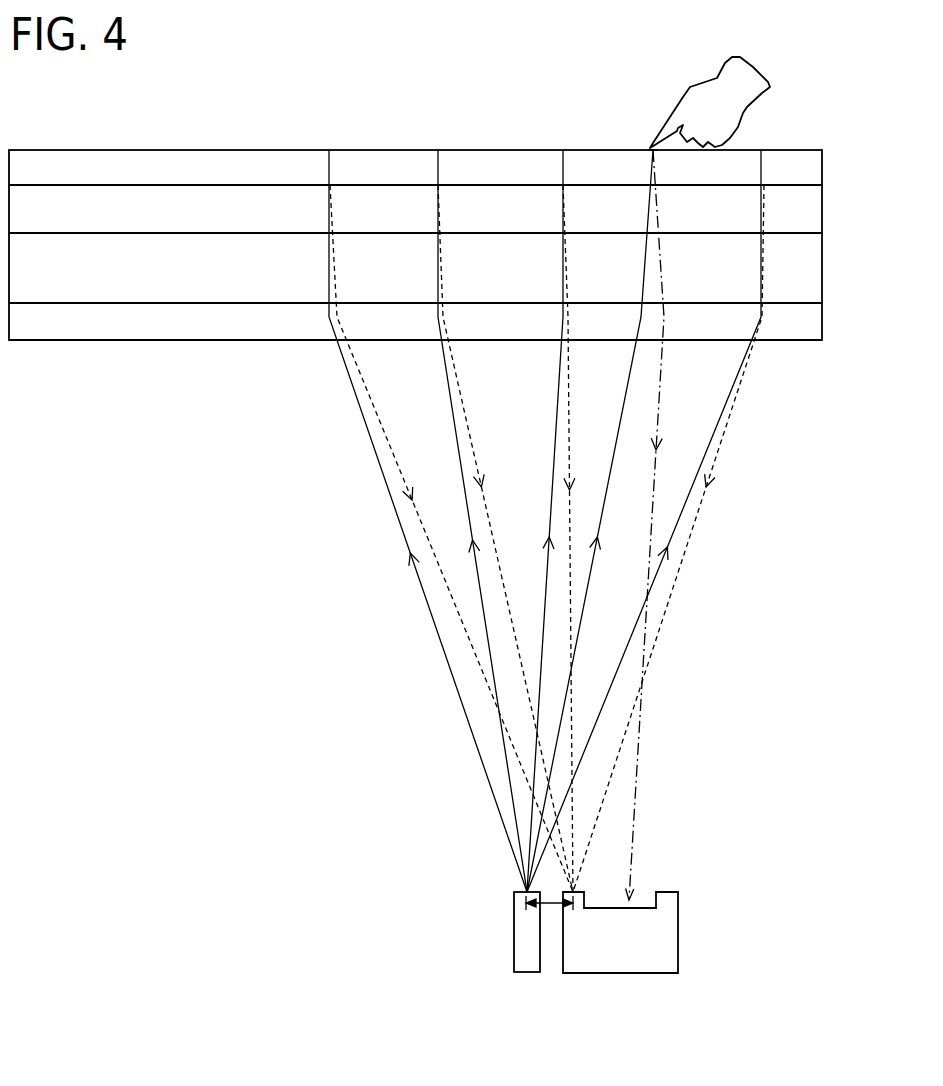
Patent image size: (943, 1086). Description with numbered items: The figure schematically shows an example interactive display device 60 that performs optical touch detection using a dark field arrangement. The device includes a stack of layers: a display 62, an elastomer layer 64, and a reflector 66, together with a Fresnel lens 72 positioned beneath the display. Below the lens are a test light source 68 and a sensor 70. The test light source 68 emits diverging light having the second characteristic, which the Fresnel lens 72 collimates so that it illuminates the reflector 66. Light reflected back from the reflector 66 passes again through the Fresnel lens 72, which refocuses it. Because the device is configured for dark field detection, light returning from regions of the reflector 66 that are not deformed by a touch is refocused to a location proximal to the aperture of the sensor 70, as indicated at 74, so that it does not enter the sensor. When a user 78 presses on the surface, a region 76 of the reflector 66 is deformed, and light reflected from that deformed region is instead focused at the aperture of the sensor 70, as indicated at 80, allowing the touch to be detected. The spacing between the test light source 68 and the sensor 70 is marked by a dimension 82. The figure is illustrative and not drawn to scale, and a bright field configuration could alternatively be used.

The interactive display device 60 is at (277, 97).
The display 62 is at (148, 281).
The elastomer layer 64 is at (266, 222).
The reflector 66 is at (301, 179).
The test light source 68 is at (514, 943).
The sensor 70 is at (653, 957).
The Fresnel lens 72 is at (220, 336).
The refocused light from undeformed regions 74 is at (587, 883).
The deformed region 76 is at (651, 152).
The user 78 is at (722, 116).
The light focused at sensor aperture 80 is at (630, 896).
The emitter-detector separation 82 is at (550, 906).